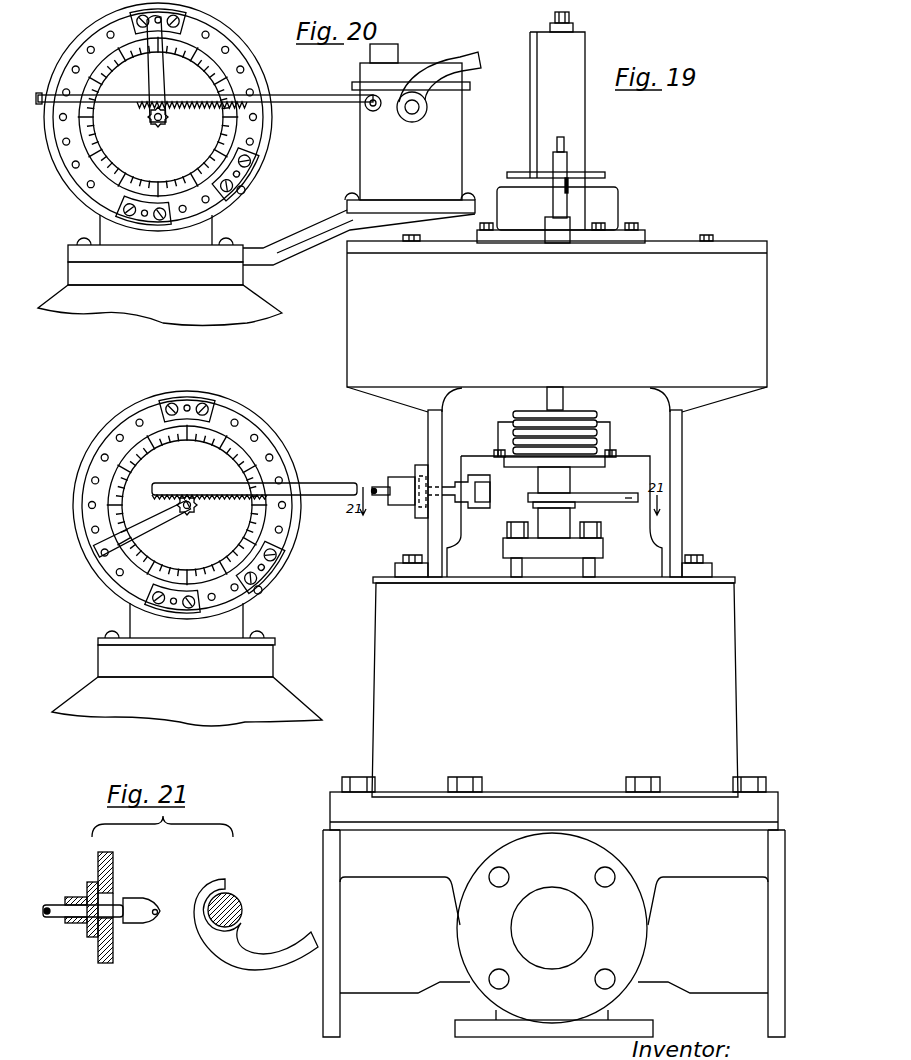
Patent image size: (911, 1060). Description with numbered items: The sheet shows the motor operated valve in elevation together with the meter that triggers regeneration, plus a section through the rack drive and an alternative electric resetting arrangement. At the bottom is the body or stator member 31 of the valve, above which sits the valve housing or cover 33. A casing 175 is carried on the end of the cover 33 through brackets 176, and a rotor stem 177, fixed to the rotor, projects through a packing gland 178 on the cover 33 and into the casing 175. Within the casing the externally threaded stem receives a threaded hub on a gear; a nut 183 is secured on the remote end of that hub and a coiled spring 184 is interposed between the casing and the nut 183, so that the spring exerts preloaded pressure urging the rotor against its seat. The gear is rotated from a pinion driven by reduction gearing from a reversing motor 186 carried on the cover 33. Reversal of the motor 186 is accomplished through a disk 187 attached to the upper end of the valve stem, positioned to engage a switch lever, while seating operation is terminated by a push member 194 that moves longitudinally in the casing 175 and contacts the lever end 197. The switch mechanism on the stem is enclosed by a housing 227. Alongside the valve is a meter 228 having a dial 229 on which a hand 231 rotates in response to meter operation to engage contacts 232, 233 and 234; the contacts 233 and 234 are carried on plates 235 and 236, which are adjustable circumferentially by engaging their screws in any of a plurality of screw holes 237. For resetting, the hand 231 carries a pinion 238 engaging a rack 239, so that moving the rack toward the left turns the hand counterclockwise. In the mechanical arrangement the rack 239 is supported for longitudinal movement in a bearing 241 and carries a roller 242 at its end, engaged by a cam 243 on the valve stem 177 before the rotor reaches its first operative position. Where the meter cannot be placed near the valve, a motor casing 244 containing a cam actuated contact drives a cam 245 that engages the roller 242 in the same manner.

In FIG. 19, the body or stator member 31 is at (554, 907).
In FIG. 19, the valve housing or cover 33 is at (555, 690).
In FIG. 19, the casing 175 is at (759, 237).
In FIG. 19, the brackets 176 is at (675, 410).
In FIG. 21, the brackets 176 is at (116, 866).
In FIG. 19, the rotor stem 177 is at (563, 478).
In FIG. 21, the rotor stem 177 is at (222, 895).
In FIG. 19, the packing gland 178 is at (553, 549).
In FIG. 19, the nut 183 is at (608, 462).
In FIG. 19, the coiled spring 184 is at (605, 437).
In FIG. 19, the motor 186 is at (647, 533).
In FIG. 19, the disk 187 is at (606, 174).
In FIG. 19, the push member 194 is at (556, 205).
In FIG. 19, the end of lever 197 is at (567, 140).
In FIG. 19, the housing 227 is at (612, 208).
In FIG. 20, the meter 228 is at (160, 282).
In FIG. 19, the meter 228 is at (187, 678).
In FIG. 20, the dial 229 is at (258, 58).
In FIG. 19, the dial 229 is at (244, 418).
In FIG. 20, the hand 231 is at (161, 75).
In FIG. 19, the hand 231 is at (164, 525).
In FIG. 20, the contact 232 is at (178, 15).
In FIG. 19, the contact 232 is at (193, 403).
In FIG. 20, the contact 233 is at (200, 224).
In FIG. 19, the contact 233 is at (191, 601).
In FIG. 20, the contact 234 is at (222, 194).
In FIG. 19, the contact 234 is at (262, 586).
In FIG. 20, the plate 235 is at (99, 226).
In FIG. 19, the plate 235 is at (133, 607).
In FIG. 20, the plate 236 is at (248, 165).
In FIG. 19, the plate 236 is at (283, 553).
In FIG. 20, the screw holes 237 is at (74, 162).
In FIG. 19, the screw holes 237 is at (100, 570).
In FIG. 20, the pinion 238 is at (160, 128).
In FIG. 19, the pinion 238 is at (200, 508).
In FIG. 20, the rack 239 is at (292, 98).
In FIG. 19, the rack 239 is at (313, 485).
In FIG. 21, the rack 239 is at (55, 918).
In FIG. 19, the bearing 241 is at (403, 481).
In FIG. 21, the bearing 241 is at (80, 895).
In FIG. 20, the roller 242 is at (372, 112).
In FIG. 19, the roller 242 is at (490, 502).
In FIG. 21, the roller 242 is at (154, 906).
In FIG. 19, the cam 243 is at (600, 500).
In FIG. 21, the cam 243 is at (268, 958).
In FIG. 20, the motor casing 244 is at (410, 128).
In FIG. 20, the cam 245 is at (456, 57).